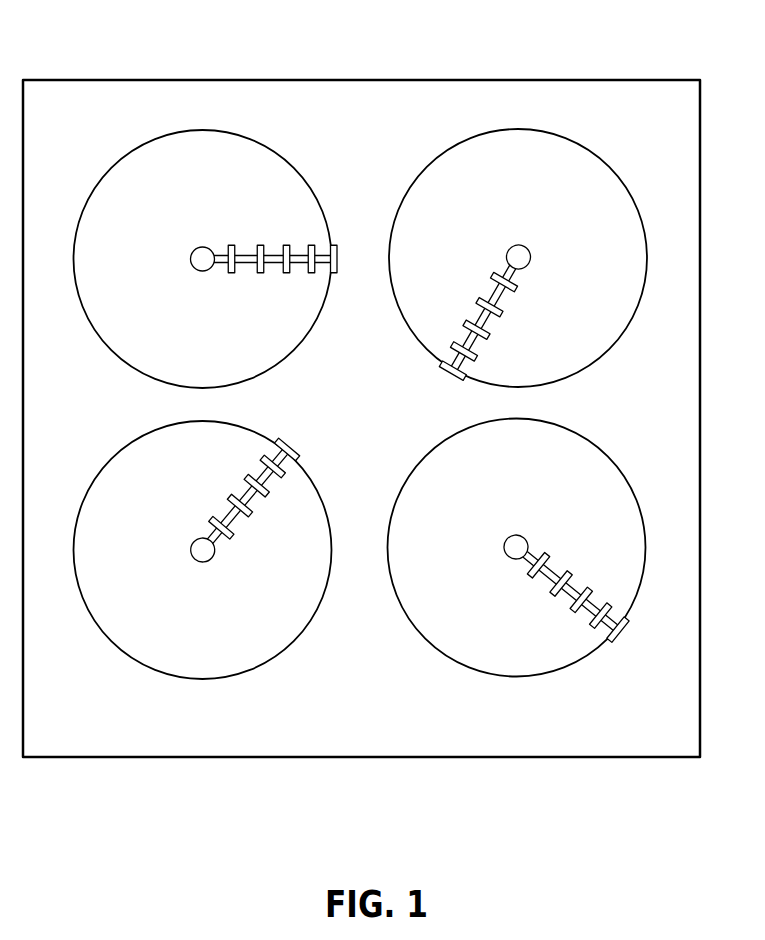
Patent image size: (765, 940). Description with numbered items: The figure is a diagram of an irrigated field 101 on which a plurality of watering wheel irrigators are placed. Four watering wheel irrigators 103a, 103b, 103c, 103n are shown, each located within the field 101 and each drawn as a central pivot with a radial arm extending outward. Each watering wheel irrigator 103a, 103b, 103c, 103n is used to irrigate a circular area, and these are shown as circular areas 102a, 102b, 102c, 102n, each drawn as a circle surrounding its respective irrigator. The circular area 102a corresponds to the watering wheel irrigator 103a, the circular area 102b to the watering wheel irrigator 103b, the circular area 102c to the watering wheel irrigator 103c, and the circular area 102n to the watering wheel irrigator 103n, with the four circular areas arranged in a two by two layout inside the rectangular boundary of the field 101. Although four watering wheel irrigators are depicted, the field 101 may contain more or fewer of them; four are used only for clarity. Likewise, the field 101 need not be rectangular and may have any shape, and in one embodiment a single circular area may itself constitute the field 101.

The irrigated field 101 is at (88, 70).
The circular area 102a is at (100, 183).
The circular area 102b is at (420, 173).
The circular area 102c is at (120, 650).
The circular area 102n is at (457, 663).
The watering wheel irrigator 103a is at (250, 257).
The watering wheel irrigator 103b is at (478, 317).
The watering wheel irrigator 103c is at (242, 498).
The watering wheel irrigator 103n is at (550, 567).